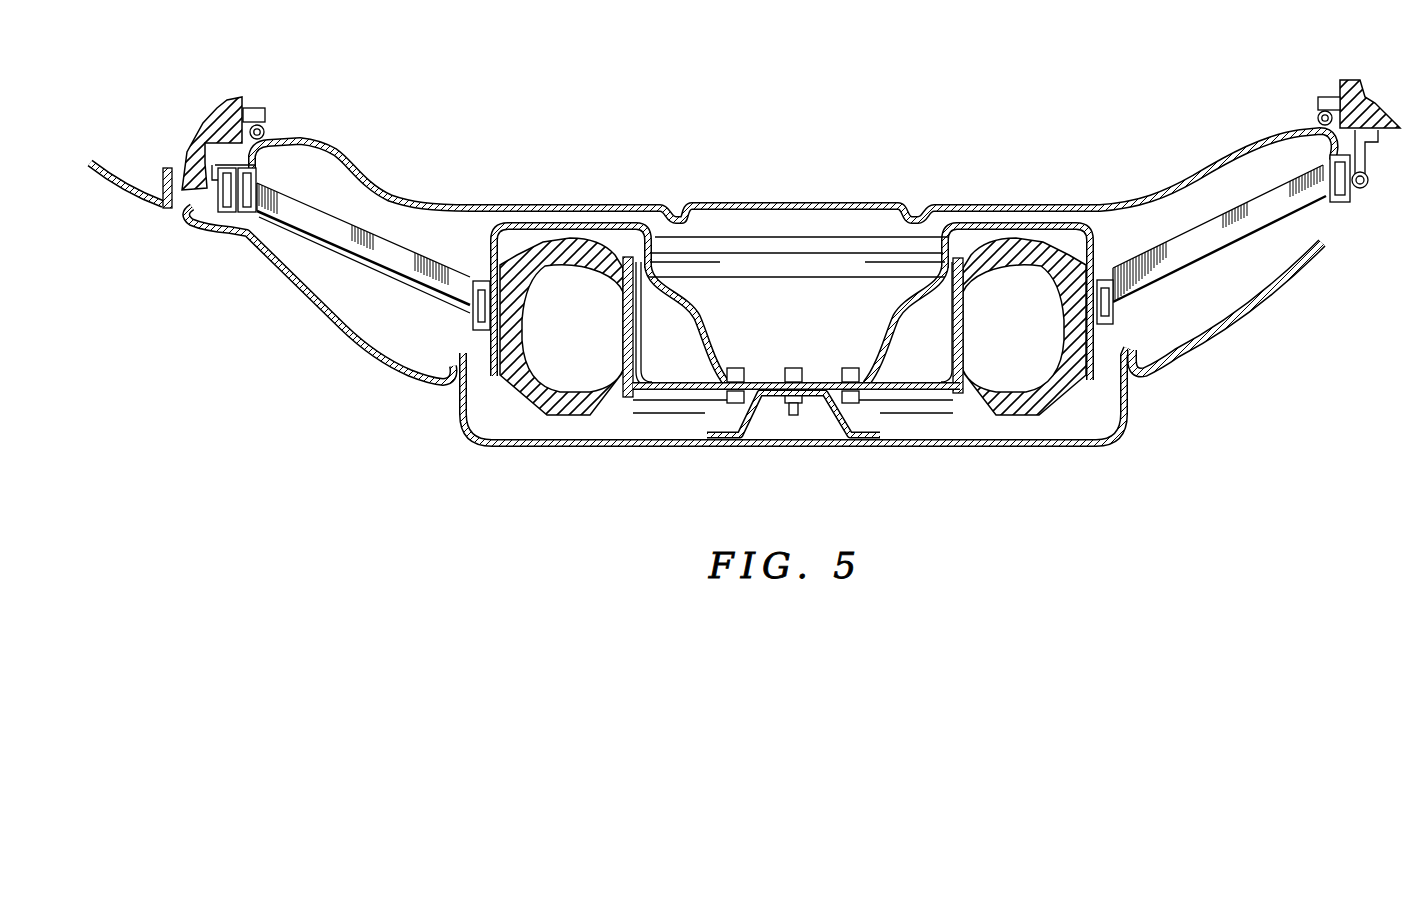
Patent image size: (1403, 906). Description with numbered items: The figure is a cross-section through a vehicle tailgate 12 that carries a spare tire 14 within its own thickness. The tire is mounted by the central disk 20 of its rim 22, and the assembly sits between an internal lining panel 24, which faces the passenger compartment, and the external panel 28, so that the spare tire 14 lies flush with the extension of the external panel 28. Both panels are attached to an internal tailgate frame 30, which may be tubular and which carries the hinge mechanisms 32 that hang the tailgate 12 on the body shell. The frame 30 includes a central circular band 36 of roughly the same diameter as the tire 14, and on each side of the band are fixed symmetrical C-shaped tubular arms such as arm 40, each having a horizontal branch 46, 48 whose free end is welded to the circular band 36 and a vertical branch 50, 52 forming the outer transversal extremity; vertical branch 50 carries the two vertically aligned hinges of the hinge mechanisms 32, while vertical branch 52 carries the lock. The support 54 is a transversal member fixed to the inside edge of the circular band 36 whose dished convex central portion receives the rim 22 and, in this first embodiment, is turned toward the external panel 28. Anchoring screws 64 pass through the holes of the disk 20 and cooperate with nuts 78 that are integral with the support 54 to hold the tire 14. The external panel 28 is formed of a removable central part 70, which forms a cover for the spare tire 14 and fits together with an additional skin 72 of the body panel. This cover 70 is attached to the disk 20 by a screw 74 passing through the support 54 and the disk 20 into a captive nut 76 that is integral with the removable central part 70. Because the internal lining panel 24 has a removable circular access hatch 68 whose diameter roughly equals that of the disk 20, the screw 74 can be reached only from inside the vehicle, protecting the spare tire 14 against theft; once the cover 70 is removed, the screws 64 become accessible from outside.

The tailgate 12 is at (1225, 341).
The spare tire 14 is at (582, 236).
The central disk 20 is at (645, 406).
The rim 22 is at (614, 313).
The internal lining panel 24 is at (396, 189).
The external panel 28 is at (333, 329).
The internal tailgate frame 30 is at (312, 184).
The hinge mechanisms 32 is at (1366, 196).
The central circular band 36 is at (470, 331).
The transversal arm 40 is at (350, 243).
The horizontal branch 46 is at (1168, 262).
The horizontal branch 48 is at (388, 264).
The vertical branch 50 is at (1334, 207).
The vertical branch 52 is at (252, 218).
The support 54 is at (714, 308).
The anchoring screws 64 is at (848, 412).
The access hatch 68 is at (790, 202).
The removable central part 70 is at (577, 449).
The additional skin 72 is at (298, 288).
The screw 74 is at (793, 367).
The captive nut 76 is at (783, 410).
The nuts 78 is at (740, 367).